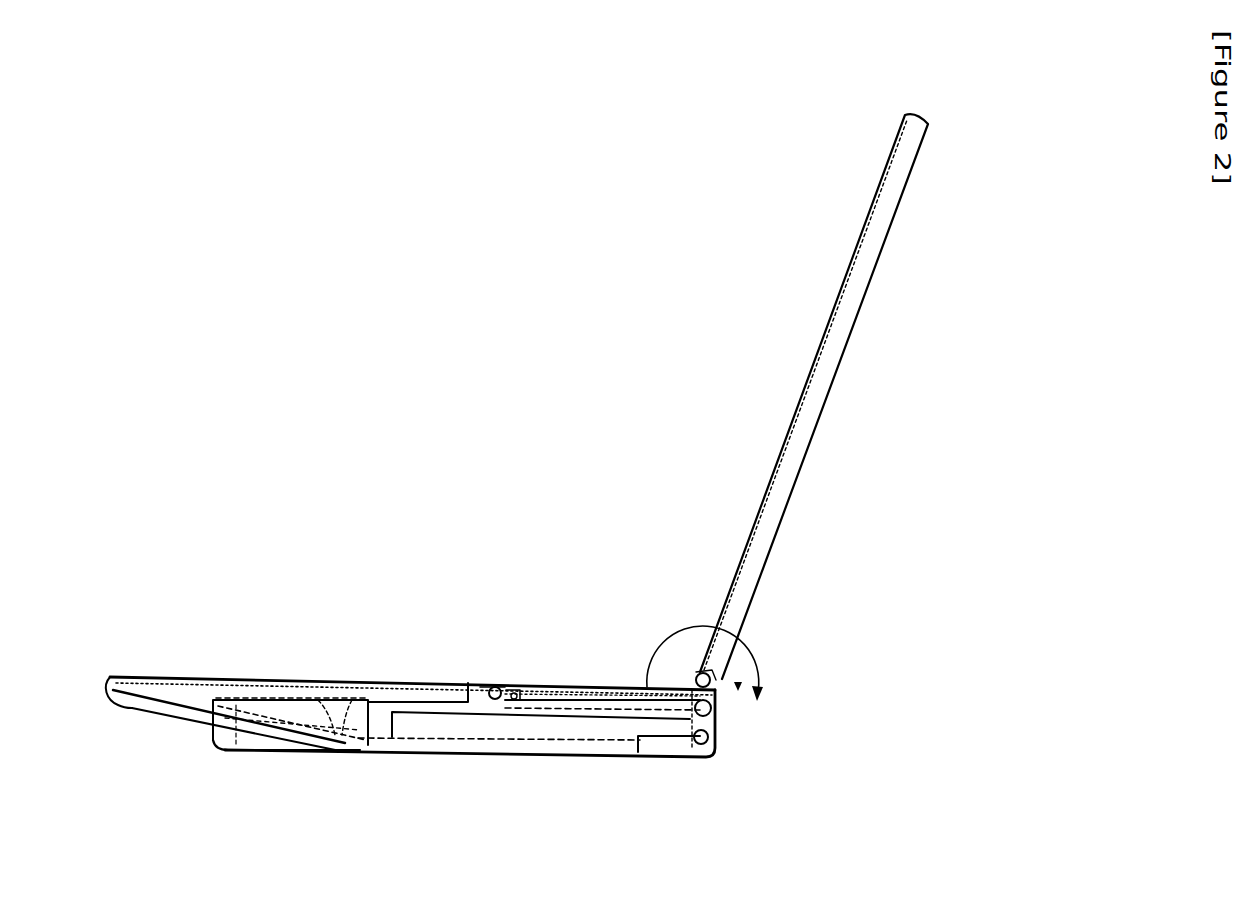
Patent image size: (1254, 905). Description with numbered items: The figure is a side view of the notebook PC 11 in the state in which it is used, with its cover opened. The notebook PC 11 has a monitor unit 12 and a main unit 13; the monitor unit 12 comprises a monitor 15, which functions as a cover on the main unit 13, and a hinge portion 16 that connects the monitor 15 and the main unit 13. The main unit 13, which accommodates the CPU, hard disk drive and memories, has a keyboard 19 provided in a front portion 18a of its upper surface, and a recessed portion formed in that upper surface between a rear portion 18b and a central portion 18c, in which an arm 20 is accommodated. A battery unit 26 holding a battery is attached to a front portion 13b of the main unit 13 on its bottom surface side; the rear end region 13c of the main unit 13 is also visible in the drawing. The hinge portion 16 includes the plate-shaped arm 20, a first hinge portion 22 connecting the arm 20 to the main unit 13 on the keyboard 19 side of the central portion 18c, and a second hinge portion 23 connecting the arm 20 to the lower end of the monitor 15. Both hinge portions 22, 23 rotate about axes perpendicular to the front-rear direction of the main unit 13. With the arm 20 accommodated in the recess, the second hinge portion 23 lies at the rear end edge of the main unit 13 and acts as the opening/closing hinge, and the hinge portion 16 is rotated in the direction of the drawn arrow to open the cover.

The notebook PC 11 is at (496, 220).
The monitor unit 12 is at (722, 368).
The main unit 13 is at (560, 782).
The front portion 13b is at (180, 742).
The rear end portion of main body 13c is at (718, 723).
The monitor 15 is at (898, 205).
The hinge portion 16 is at (650, 593).
The front portion of upper surface 18a is at (142, 677).
The rear portion of upper surface 18b is at (620, 687).
The central portion of upper surface 18c is at (473, 687).
The keyboard 19 is at (153, 705).
The arm 20 is at (573, 687).
The first hinge portion 22 is at (502, 687).
The second hinge portion 23 is at (702, 673).
The battery unit 26 is at (314, 752).